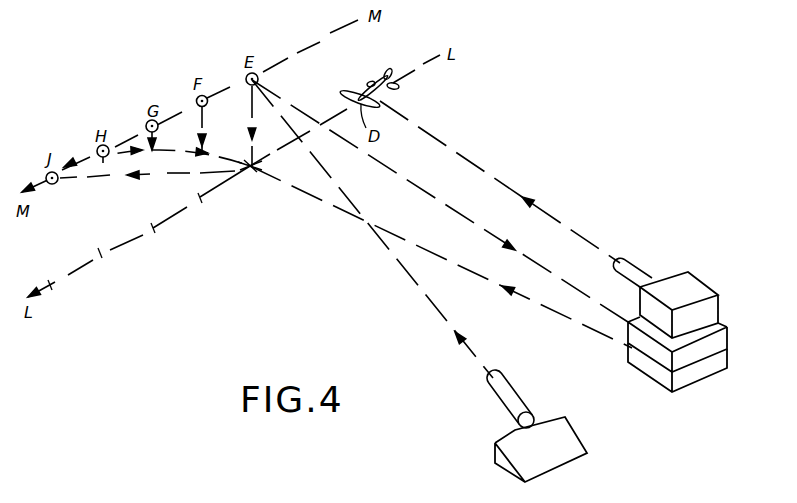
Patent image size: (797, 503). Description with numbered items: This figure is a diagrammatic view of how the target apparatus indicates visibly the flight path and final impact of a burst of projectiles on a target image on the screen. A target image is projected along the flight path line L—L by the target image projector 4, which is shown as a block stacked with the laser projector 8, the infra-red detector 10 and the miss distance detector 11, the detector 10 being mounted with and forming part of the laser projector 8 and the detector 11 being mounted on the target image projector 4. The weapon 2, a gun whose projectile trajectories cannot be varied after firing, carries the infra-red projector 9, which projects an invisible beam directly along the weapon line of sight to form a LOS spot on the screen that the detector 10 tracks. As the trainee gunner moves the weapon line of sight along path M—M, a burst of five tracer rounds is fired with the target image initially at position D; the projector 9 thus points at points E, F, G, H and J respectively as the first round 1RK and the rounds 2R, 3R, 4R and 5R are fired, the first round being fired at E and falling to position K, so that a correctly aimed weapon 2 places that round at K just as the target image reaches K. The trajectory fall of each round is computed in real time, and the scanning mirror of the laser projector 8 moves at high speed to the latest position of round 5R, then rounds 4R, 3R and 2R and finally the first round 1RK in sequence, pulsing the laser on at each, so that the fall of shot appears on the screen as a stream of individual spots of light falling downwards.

The weapon 2 is at (563, 455).
The target image projector 4 is at (697, 285).
The laser projector 8 is at (662, 377).
The infra-red projector 9 is at (503, 398).
The infra-red detector 10 is at (650, 343).
The miss distance detector 11 is at (643, 272).
The round 1R falling to position K 1RK is at (247, 141).
The second tracer round 2R is at (200, 207).
The third tracer round 3R is at (153, 237).
The fourth tracer round 4R is at (105, 264).
The fifth tracer round 5R is at (58, 294).